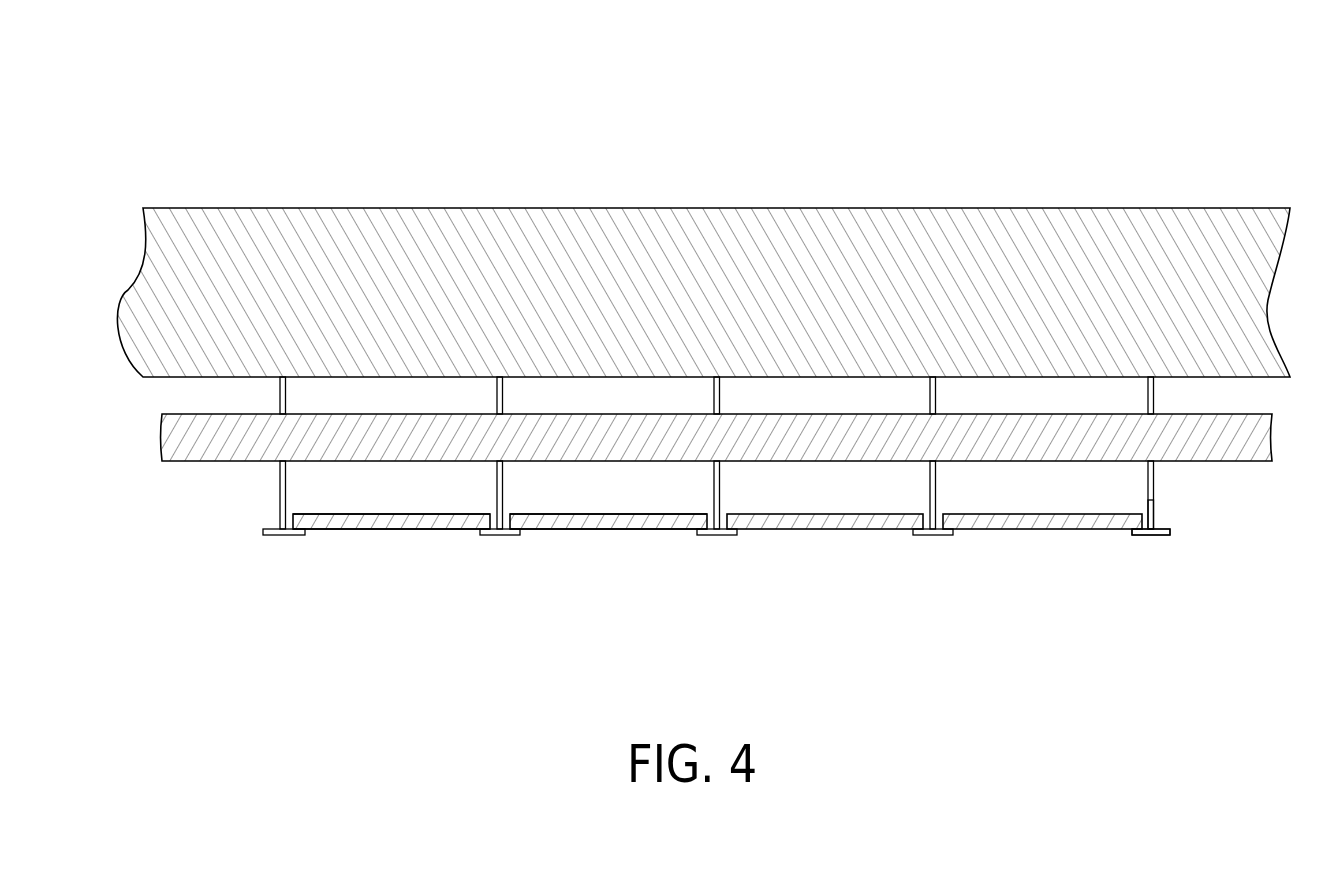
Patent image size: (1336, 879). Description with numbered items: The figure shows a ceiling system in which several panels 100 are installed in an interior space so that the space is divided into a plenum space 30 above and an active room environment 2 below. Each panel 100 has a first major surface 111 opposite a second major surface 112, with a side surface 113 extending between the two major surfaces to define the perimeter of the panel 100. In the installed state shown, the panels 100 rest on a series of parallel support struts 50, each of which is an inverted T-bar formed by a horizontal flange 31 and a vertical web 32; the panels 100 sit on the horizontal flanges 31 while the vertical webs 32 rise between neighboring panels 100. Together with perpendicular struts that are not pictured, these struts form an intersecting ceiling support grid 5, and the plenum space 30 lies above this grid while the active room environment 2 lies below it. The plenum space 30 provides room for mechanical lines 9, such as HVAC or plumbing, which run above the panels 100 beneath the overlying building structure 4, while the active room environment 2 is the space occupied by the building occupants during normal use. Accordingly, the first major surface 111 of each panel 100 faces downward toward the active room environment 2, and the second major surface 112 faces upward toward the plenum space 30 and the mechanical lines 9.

The panel 100 is at (1120, 91).
The upper slab 4 is at (178, 252).
The mechanical lines 9 is at (183, 438).
The plenum space 30 is at (312, 485).
The horizontal flange 31 is at (935, 536).
The vertical web 32 is at (940, 487).
The support strut 50 is at (722, 480).
The ceiling support grid 5 is at (1172, 515).
The active room environment 2 is at (1129, 597).
The first major surface 111 is at (374, 530).
The second major surface 112 is at (333, 528).
The side surface 113 is at (263, 524).